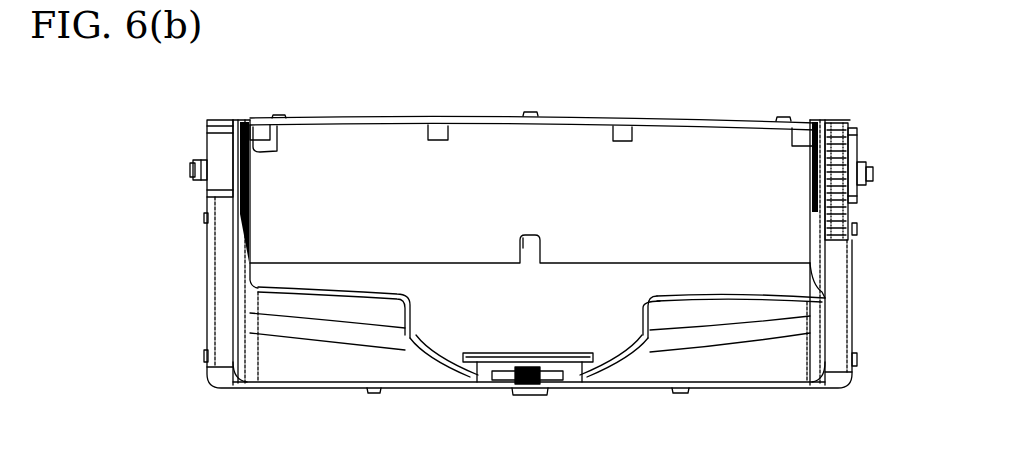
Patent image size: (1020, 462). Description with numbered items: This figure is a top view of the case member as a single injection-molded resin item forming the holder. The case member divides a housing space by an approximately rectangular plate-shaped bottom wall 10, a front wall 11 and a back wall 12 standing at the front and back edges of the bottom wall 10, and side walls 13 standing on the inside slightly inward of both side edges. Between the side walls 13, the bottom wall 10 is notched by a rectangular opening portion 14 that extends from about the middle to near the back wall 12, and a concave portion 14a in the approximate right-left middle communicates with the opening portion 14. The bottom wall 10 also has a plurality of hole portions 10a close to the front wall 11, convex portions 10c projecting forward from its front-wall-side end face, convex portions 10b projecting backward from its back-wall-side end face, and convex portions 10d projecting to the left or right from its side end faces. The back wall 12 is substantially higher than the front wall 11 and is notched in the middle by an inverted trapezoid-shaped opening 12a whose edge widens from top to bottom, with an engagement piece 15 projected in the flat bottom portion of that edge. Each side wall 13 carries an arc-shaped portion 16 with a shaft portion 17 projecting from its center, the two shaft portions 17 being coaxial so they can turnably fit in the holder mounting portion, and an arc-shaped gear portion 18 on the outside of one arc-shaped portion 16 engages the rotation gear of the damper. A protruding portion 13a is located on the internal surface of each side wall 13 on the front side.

The bottom wall 10 is at (700, 150).
The hole portions 10a is at (255, 125).
The convex portions 10b is at (373, 393).
The convex portions 10c is at (277, 115).
The convex portions 10d is at (206, 220).
The front wall 11 is at (340, 122).
The back wall 12 is at (258, 367).
The opening 12a is at (442, 360).
The side walls 13 is at (237, 238).
The protruding portion 13a is at (271, 121).
The opening portion 14 is at (584, 314).
The concave portion 14a is at (525, 253).
The engagement piece 15 is at (528, 367).
The arc-shaped portions 16 is at (215, 148).
The shaft portions 17 is at (190, 166).
The arc-shaped gear portion 18 is at (840, 125).